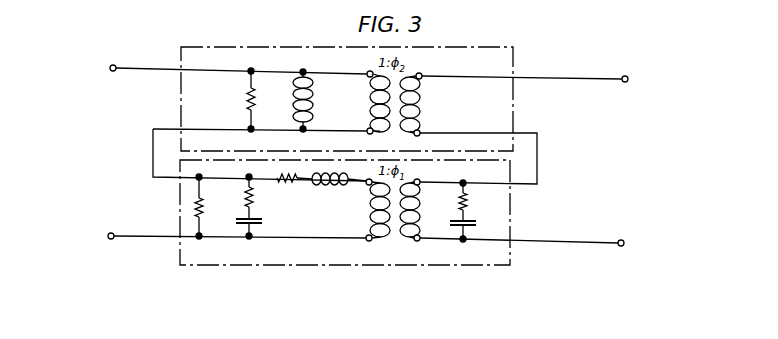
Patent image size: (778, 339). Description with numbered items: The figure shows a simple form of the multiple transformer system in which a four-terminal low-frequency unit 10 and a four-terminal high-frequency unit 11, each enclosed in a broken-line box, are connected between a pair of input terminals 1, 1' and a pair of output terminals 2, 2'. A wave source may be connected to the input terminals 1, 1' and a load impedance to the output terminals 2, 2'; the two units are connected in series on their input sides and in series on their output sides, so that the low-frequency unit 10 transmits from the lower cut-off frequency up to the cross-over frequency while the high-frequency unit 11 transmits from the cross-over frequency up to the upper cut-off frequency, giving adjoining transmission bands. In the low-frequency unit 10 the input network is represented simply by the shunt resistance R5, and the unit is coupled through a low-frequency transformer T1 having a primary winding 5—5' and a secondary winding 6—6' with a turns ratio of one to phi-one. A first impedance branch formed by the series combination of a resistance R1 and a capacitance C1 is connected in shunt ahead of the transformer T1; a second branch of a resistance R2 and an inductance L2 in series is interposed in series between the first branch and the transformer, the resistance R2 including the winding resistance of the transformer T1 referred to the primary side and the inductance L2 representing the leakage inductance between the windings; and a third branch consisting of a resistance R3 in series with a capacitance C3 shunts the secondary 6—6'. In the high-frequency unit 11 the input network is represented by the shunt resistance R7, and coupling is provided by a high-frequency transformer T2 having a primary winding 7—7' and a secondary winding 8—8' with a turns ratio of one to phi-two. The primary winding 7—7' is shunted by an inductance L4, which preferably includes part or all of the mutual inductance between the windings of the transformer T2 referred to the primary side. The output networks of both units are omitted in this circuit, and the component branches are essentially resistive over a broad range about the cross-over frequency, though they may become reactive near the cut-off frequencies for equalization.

The low-frequency unit 10 is at (252, 257).
The high-frequency unit 11 is at (240, 47).
The input terminal 1 is at (229, 68).
The input terminal 1' is at (227, 236).
The output terminal 2 is at (533, 78).
The output terminal 2' is at (532, 243).
The primary winding terminal 5 is at (365, 174).
The primary winding terminal 5' is at (361, 248).
The secondary winding terminal 6 is at (421, 174).
The secondary winding terminal 6' is at (421, 248).
The primary winding terminal 7 is at (365, 66).
The primary winding terminal 7' is at (363, 138).
The secondary winding terminal 8 is at (422, 67).
The secondary winding terminal 8' is at (423, 139).
The low-frequency transformer T1 is at (395, 224).
The high-frequency transformer T2 is at (395, 115).
The resistance R1 is at (257, 196).
The resistance R2 is at (287, 190).
The resistance R3 is at (473, 200).
The shunt resistance R5 is at (208, 206).
The shunt resistance R7 is at (238, 100).
The capacitance C1 is at (257, 227).
The capacitance C3 is at (470, 230).
The inductance L2 is at (331, 190).
The inductance L4 is at (311, 100).